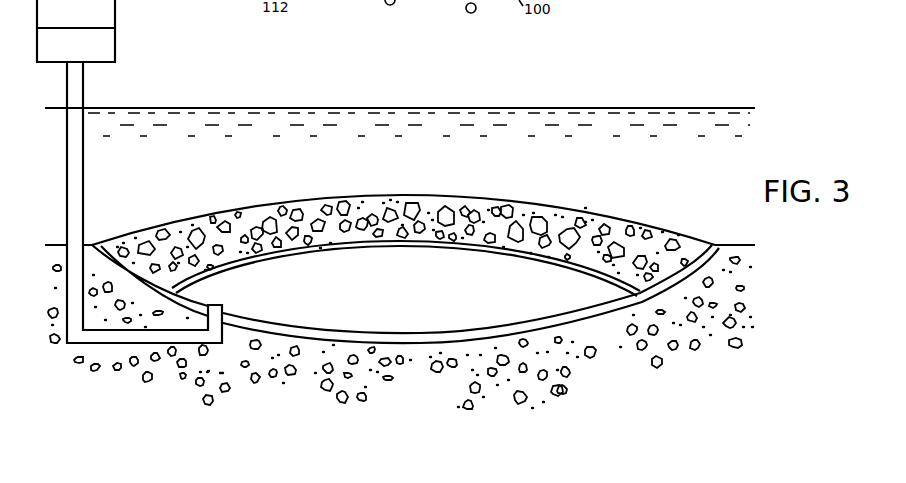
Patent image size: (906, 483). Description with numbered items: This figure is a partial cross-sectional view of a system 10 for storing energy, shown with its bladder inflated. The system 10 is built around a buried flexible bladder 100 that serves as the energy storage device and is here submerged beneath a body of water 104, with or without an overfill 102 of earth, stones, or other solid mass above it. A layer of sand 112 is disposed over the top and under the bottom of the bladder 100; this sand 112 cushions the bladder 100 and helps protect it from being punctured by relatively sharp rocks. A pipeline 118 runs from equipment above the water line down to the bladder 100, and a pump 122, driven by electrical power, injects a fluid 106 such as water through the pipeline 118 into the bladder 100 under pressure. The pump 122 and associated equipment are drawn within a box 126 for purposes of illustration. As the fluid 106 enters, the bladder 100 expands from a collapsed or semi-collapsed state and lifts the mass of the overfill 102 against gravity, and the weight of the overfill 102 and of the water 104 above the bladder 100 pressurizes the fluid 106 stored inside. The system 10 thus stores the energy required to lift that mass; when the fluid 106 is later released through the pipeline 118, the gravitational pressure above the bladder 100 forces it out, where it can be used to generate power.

The system for storing energy 10 is at (418, 438).
The flexible bladder 100 is at (575, 271).
The overfill 102 is at (444, 220).
The body of water 104 is at (222, 175).
The fluid 106 is at (433, 302).
The layer of sand 112 is at (310, 222).
The pipeline 118 is at (83, 90).
The pump 122 is at (88, 19).
The box 126 is at (90, 52).